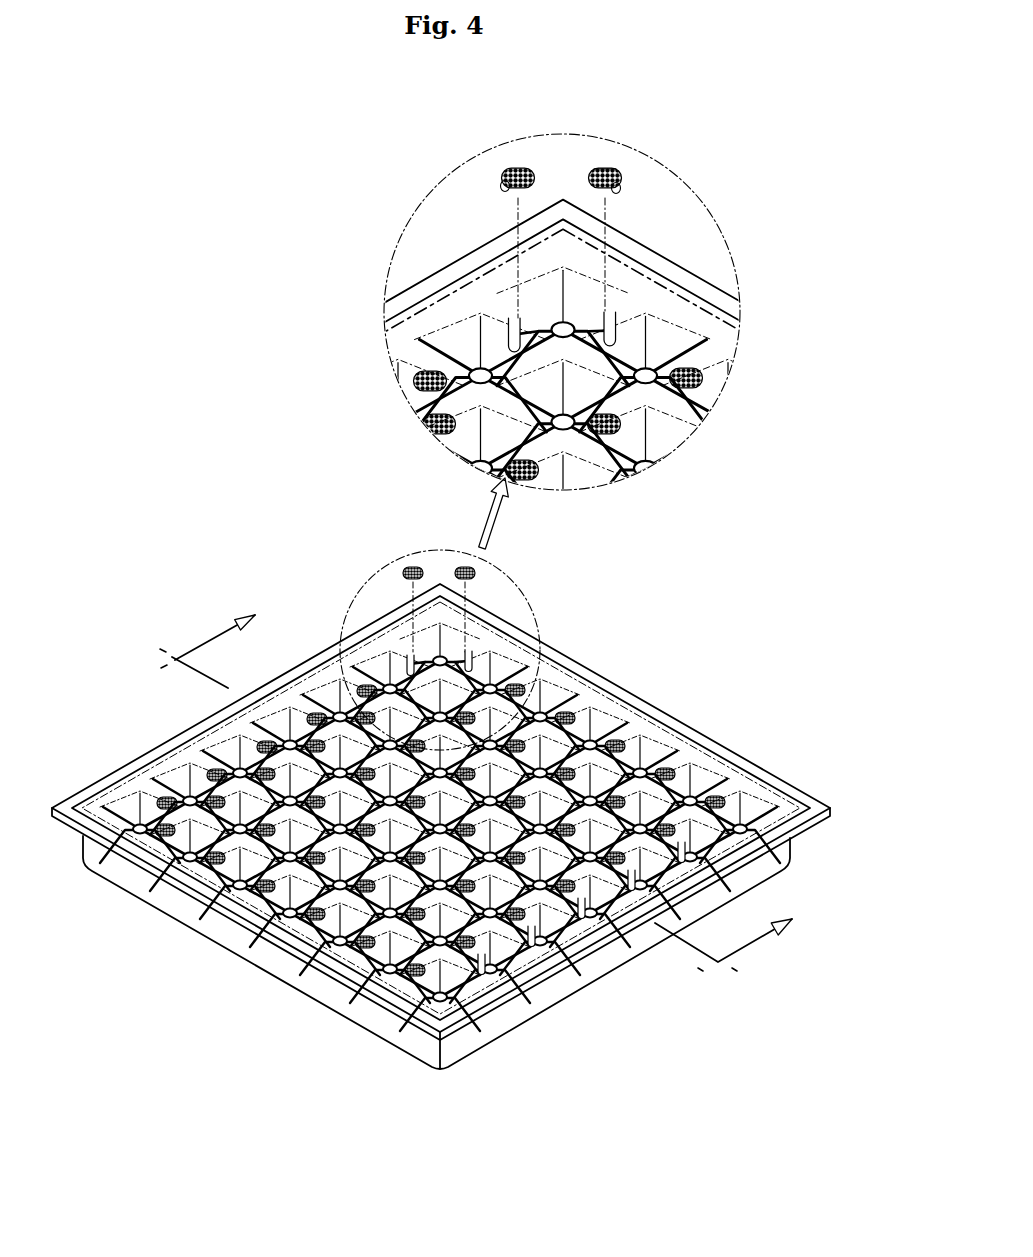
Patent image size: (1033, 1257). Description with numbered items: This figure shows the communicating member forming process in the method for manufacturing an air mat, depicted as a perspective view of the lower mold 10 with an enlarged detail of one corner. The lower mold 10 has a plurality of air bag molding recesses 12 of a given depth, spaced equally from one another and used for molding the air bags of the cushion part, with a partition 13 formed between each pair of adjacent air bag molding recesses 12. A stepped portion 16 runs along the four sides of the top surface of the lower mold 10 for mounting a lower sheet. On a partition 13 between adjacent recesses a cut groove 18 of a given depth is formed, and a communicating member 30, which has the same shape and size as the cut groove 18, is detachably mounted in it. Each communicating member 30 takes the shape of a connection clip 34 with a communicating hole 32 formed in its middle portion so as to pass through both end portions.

The lower mold 10 is at (651, 695).
The air bag molding recess 12 is at (462, 357).
The partition 13 is at (516, 459).
The stepped portion 16 is at (653, 294).
The cut groove 18 is at (515, 328).
The communicating member 30 is at (620, 210).
The communicating hole 32 is at (621, 196).
The connection clip 34 is at (604, 164).